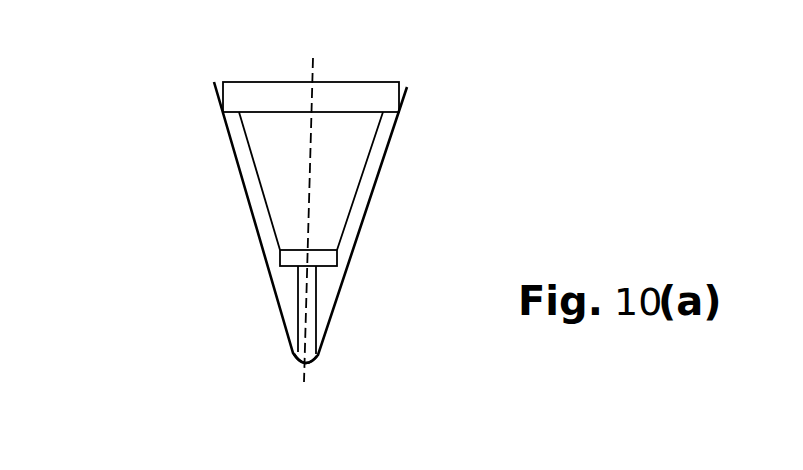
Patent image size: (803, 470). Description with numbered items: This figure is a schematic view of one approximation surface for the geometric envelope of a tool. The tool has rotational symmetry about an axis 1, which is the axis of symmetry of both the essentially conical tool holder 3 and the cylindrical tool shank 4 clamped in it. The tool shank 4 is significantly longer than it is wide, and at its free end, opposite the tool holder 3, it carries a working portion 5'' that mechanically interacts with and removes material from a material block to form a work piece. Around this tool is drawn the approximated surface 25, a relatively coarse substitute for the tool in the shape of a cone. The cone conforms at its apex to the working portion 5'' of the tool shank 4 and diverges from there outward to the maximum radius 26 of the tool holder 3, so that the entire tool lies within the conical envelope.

The axis 1 is at (317, 65).
The tool holder 3 is at (277, 145).
The tool shank 4 is at (307, 298).
The working portion 5'' is at (244, 376).
The approximated surface 25 is at (248, 204).
The maximum radius 26 is at (343, 115).